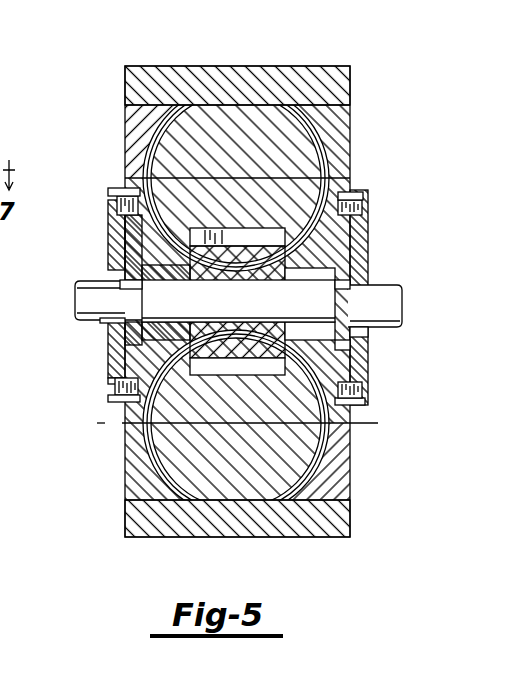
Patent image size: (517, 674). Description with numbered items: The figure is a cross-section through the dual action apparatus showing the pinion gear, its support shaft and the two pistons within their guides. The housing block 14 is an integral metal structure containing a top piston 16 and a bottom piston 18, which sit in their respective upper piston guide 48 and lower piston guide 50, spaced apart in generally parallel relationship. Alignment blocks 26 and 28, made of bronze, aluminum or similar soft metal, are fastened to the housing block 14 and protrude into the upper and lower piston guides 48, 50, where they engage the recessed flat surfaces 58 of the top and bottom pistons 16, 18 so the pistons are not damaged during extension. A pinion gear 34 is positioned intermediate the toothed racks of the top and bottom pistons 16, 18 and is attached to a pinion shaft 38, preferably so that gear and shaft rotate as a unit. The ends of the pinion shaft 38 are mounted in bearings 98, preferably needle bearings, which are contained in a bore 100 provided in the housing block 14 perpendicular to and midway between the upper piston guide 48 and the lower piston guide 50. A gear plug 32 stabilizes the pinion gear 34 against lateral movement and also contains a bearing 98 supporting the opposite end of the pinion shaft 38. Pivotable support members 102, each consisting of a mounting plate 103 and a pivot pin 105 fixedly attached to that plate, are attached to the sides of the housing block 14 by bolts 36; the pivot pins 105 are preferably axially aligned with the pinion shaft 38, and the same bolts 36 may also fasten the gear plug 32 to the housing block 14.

The housing block 14 is at (348, 132).
The top piston 16 is at (272, 156).
The bottom piston 18 is at (276, 452).
The alignment block 26 is at (284, 66).
The alignment block 28 is at (136, 538).
The gear plug 32 is at (108, 238).
The pinion gear 34 is at (362, 195).
The bolts 36 is at (108, 192).
The pinion shaft 38 is at (132, 352).
The upper piston guide 48 is at (320, 170).
The lower piston guide 50 is at (360, 400).
The recessed flat surface 58 is at (217, 103).
The bearings 98 is at (120, 284).
The bore 100 is at (115, 385).
The pivotable support member 102 is at (105, 320).
The mounting plate 103 is at (115, 187).
The pivot pin 105 is at (97, 281).